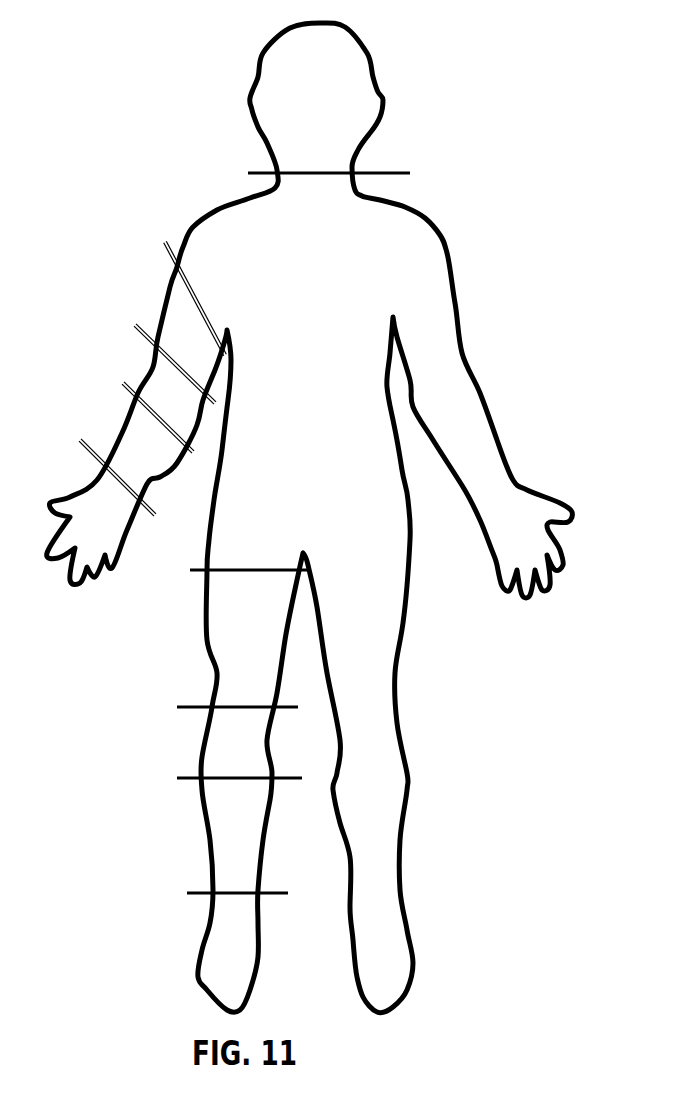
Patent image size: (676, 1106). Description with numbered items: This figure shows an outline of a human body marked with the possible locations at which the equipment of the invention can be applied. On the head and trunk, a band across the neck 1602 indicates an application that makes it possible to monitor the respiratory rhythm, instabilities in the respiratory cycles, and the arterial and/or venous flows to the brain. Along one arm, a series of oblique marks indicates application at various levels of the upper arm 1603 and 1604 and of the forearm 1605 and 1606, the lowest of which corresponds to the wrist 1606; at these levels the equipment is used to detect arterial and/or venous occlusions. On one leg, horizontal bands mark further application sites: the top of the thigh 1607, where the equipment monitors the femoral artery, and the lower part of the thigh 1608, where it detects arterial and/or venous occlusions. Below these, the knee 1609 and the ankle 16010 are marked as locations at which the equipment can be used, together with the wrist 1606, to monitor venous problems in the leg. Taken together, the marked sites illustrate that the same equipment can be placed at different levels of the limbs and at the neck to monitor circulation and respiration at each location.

The neck 1602 is at (306, 176).
The upper arm level 1603 is at (171, 292).
The upper arm level 1604 is at (151, 358).
The forearm level 1605 is at (133, 411).
The wrist 1606 is at (102, 467).
The top of the thigh 1607 is at (224, 568).
The lower part of the thigh 1608 is at (220, 695).
The knee 1609 is at (221, 766).
The ankle 16010 is at (215, 879).